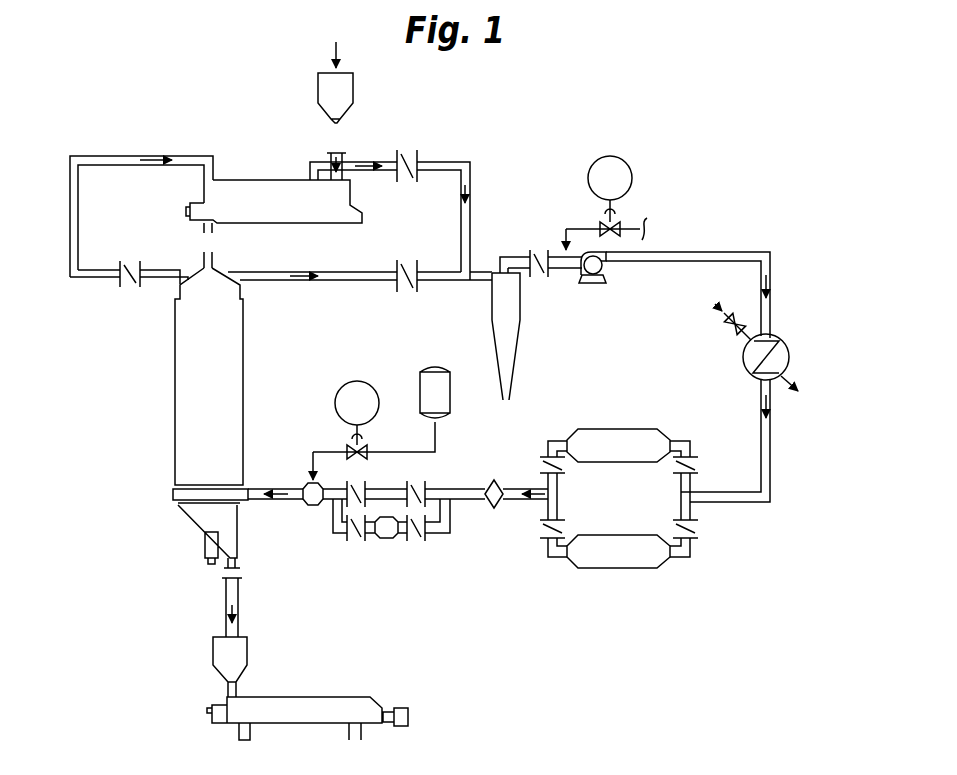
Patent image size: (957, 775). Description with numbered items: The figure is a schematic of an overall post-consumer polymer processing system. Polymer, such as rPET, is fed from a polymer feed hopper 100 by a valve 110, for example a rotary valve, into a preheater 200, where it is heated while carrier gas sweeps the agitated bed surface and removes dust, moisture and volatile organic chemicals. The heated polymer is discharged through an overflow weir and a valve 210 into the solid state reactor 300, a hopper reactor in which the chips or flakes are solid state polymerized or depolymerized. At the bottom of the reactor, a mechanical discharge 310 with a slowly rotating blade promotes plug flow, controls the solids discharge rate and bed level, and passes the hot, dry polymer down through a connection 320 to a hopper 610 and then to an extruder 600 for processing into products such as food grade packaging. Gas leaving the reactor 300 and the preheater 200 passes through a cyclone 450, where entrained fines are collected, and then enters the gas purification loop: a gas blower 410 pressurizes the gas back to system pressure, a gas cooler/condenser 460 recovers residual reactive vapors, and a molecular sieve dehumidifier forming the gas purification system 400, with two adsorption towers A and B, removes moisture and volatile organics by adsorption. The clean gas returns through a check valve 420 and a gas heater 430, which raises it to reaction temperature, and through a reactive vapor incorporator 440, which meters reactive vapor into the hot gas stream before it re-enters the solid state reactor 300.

The polymer feed hopper 100 is at (335, 82).
The valve 110 is at (313, 159).
The preheater 200 is at (274, 201).
The valve 210 is at (184, 245).
The solid state reactor 300 is at (210, 385).
The mechanical discharge 310 is at (209, 536).
The discharge valve flange 320 is at (252, 600).
The gas purification system 400 is at (619, 498).
The gas blower 410 is at (659, 247).
The check valve 420 is at (491, 508).
The gas heater 430 is at (391, 533).
The reactive vapor incorporator 440 is at (376, 436).
The cyclone 450 is at (492, 308).
The gas cooler/condenser 460 is at (787, 347).
The extruder 600 is at (307, 718).
The hopper 610 is at (230, 667).